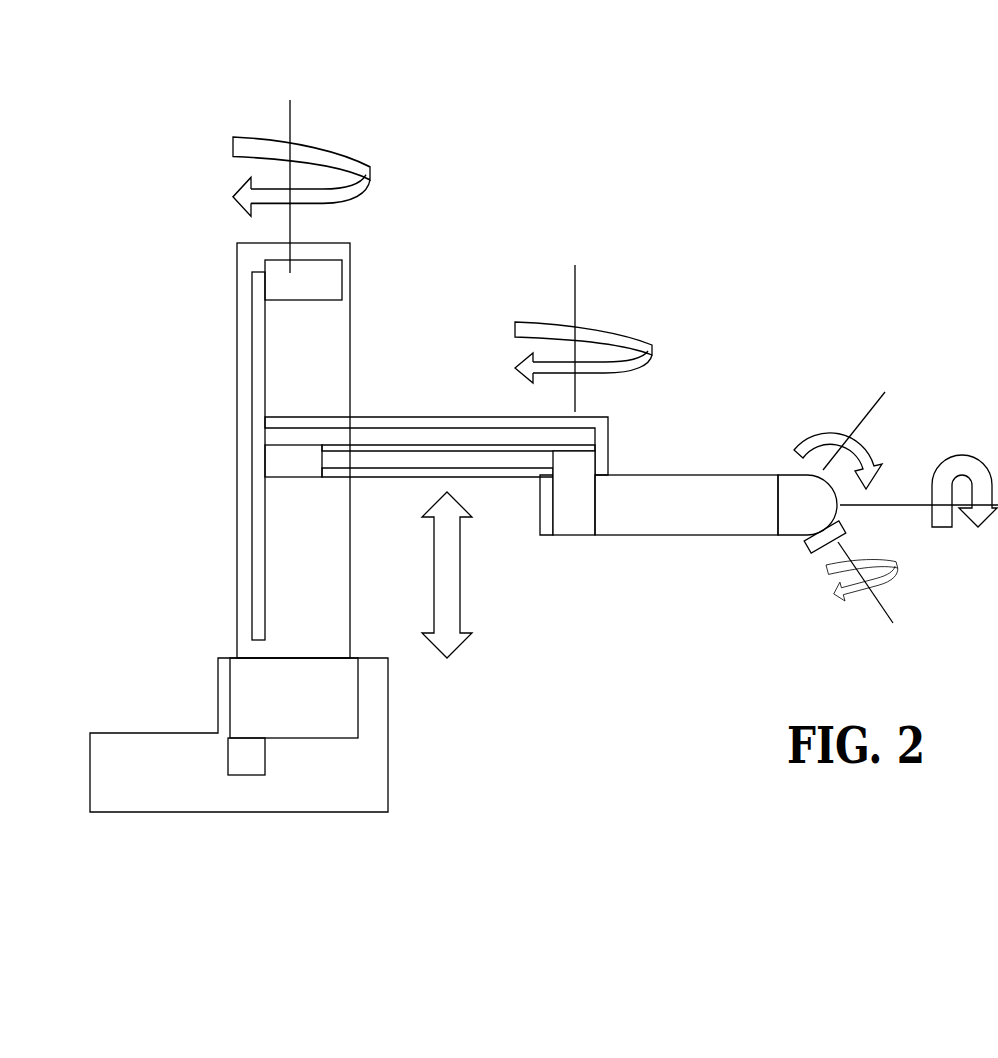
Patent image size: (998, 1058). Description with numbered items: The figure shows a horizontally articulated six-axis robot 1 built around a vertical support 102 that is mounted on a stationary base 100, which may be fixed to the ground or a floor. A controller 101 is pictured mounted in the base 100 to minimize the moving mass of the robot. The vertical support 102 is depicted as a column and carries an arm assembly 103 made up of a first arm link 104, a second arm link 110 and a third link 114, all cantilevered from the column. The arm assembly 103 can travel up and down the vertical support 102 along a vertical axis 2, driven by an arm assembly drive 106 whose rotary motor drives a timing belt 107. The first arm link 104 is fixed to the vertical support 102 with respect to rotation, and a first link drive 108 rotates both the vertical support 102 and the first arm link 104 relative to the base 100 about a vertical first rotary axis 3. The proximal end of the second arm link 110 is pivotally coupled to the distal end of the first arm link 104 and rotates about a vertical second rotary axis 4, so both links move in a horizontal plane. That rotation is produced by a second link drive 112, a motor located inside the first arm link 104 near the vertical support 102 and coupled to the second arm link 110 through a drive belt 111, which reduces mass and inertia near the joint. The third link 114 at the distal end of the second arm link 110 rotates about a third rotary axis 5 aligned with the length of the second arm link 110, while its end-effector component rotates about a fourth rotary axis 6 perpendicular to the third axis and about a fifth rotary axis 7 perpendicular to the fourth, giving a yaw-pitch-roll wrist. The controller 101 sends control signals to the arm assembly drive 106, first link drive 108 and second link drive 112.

The robot 1 is at (82, 164).
The vertical axis 2 is at (462, 572).
The first rotary axis 3 is at (292, 115).
The second rotary axis 4 is at (578, 287).
The third rotary axis 5 is at (915, 503).
The fourth rotary axis 6 is at (872, 405).
The fifth rotary axis 7 is at (880, 605).
The base 100 is at (93, 757).
The controller 101 is at (230, 755).
The vertical support 102 is at (247, 580).
The arm assembly 103 is at (573, 560).
The first arm link 104 is at (425, 417).
The arm assembly drive 106 is at (272, 282).
The timing belt 107 is at (258, 350).
The first link drive 108 is at (240, 693).
The second arm link 110 is at (683, 475).
The drive belt 111 is at (372, 462).
The second link drive 112 is at (277, 457).
The third link 114 is at (795, 539).